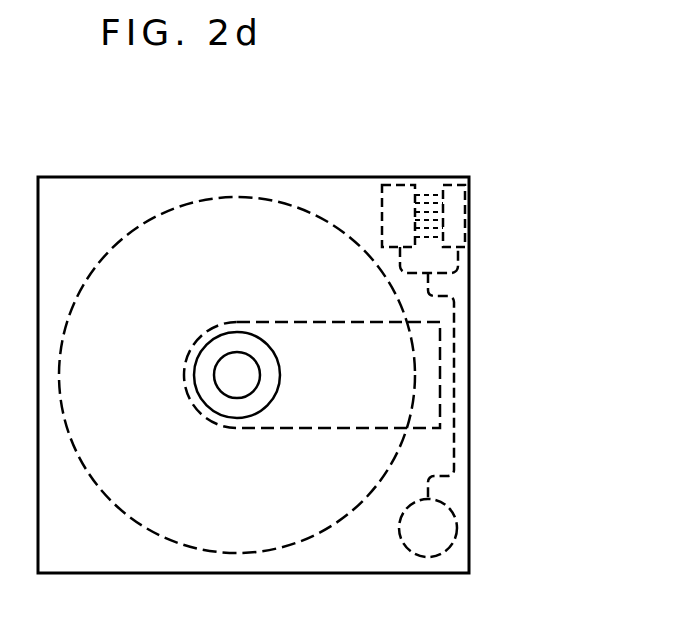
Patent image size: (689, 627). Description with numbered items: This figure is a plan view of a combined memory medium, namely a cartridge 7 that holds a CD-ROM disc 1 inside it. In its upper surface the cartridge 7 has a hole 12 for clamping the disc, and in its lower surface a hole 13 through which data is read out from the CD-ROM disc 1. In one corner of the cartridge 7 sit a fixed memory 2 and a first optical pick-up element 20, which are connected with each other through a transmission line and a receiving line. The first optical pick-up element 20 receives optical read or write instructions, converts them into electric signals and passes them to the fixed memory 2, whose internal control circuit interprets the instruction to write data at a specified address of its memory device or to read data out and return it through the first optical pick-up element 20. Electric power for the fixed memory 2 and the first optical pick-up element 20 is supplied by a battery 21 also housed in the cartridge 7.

The cartridge 7 is at (262, 178).
The CD-ROM disc 1 is at (127, 516).
The hole for clamping the disc 12 is at (282, 375).
The hole for reading out data 13 is at (440, 373).
The fixed memory 2 is at (396, 192).
The first optical pick-up element 20 is at (459, 192).
The battery 21 is at (457, 528).